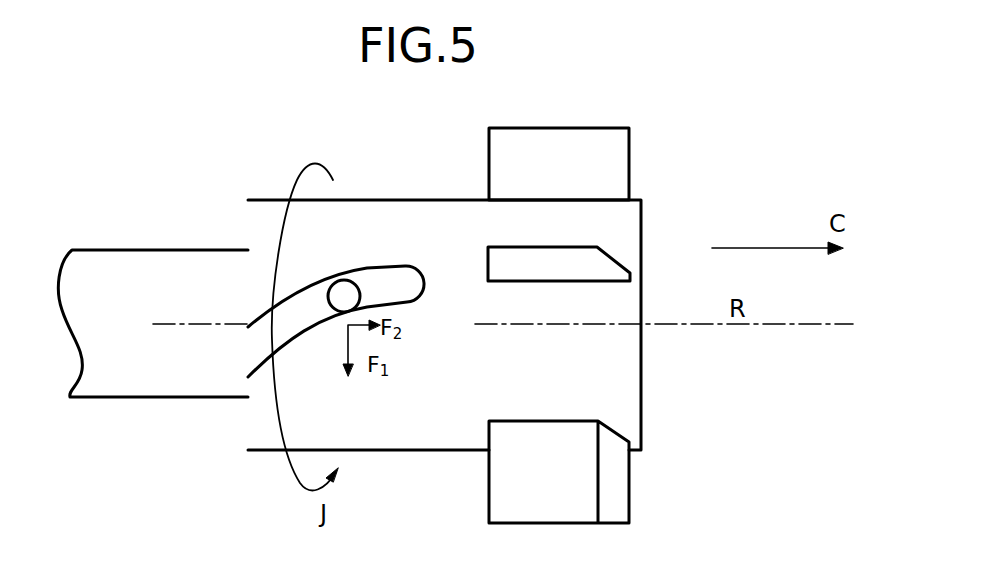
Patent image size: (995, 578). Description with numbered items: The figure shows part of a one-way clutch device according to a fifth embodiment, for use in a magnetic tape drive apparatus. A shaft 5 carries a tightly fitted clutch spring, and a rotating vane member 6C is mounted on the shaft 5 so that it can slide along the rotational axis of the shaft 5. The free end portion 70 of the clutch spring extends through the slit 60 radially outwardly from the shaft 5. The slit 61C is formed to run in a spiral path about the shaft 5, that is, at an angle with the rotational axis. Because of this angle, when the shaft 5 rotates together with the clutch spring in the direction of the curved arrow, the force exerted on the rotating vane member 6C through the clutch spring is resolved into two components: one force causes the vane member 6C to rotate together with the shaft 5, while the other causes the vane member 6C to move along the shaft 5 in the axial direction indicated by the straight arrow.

The shaft 5 is at (171, 250).
The rotating vane member 6C is at (405, 435).
The slit 60 is at (617, 162).
The slit 61C is at (262, 326).
The free end portion 70 is at (345, 287).